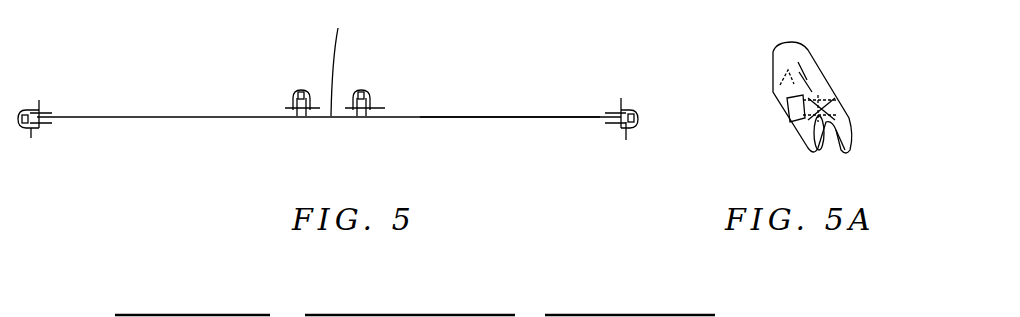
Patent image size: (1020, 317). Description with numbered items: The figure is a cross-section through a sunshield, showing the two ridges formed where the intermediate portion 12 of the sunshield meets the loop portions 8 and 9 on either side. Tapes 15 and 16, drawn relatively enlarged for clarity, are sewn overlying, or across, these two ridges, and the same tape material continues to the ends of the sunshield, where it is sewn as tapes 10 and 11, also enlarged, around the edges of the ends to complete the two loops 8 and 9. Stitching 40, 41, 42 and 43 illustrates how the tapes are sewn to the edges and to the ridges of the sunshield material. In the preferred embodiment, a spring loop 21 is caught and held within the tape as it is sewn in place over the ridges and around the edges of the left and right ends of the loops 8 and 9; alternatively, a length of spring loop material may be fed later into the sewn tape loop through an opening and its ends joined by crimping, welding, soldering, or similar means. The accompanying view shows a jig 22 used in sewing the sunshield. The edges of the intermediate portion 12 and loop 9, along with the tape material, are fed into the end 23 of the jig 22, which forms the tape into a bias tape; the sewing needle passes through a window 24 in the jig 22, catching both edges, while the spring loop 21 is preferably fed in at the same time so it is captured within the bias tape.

In FIG. 5, the loop portion 8 is at (168, 115).
In FIG. 5, the loop portion 9 is at (478, 117).
In FIG. 5, the tape 10 is at (32, 138).
In FIG. 5, the tape 11 is at (626, 140).
In FIG. 5, the intermediate portion 12 is at (346, 59).
In FIG. 5, the tape 15 is at (294, 106).
In FIG. 5, the tape 16 is at (370, 110).
In FIG. 5, the spring loop 21 is at (362, 98).
In FIG. 5A, the jig 22 is at (773, 148).
In FIG. 5A, the end of jig 23 is at (767, 58).
In FIG. 5A, the window 24 is at (785, 107).
In FIG. 5, the stitching 40 is at (39, 100).
In FIG. 5, the stitching 41 is at (288, 108).
In FIG. 5, the stitching 42 is at (380, 110).
In FIG. 5, the stitching 43 is at (620, 127).